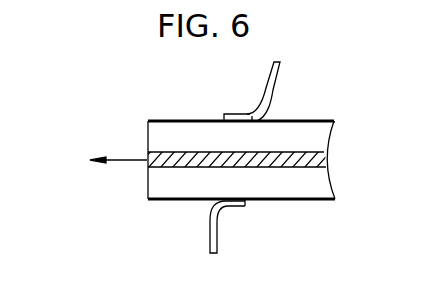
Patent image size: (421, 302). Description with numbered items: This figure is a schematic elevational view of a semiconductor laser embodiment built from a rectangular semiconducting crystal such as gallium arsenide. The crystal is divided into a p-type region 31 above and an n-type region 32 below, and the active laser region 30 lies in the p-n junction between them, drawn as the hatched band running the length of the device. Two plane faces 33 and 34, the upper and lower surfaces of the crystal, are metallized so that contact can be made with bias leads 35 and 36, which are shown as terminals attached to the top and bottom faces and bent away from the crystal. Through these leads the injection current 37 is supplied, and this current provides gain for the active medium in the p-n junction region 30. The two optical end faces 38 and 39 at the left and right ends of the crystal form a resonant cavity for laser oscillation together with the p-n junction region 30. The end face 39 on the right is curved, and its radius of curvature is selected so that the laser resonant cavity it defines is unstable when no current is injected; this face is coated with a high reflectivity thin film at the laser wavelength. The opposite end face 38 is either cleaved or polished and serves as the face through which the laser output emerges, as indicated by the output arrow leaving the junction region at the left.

The active laser region 30 is at (318, 156).
The p-type region 31 is at (158, 134).
The n-type region 32 is at (158, 192).
The plane face 33 is at (188, 120).
The plane face 34 is at (183, 201).
The bias lead 35 is at (247, 114).
The bias lead 36 is at (234, 208).
The injection current 37 is at (280, 64).
The optical end face 38 is at (148, 168).
The optical end face 39 is at (335, 128).